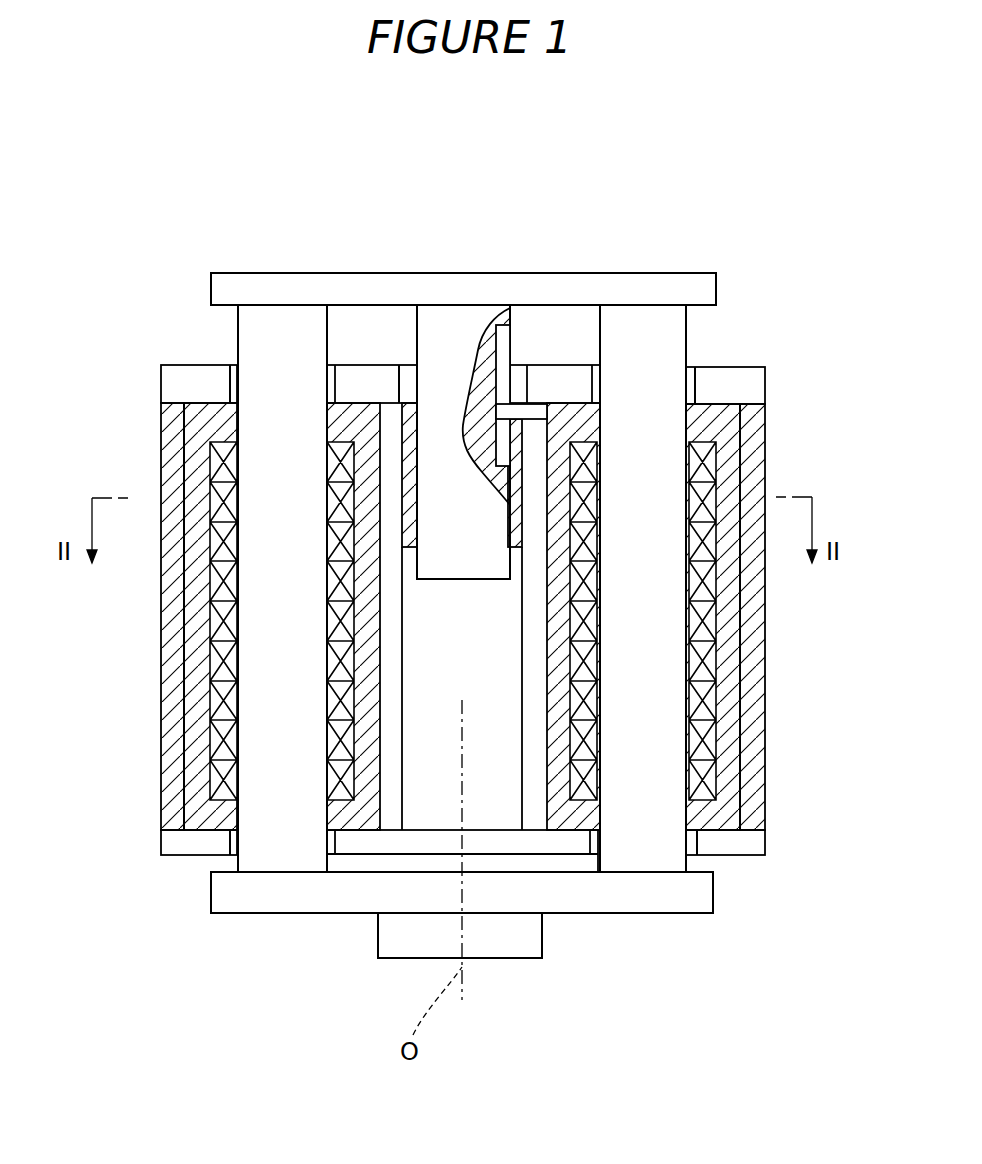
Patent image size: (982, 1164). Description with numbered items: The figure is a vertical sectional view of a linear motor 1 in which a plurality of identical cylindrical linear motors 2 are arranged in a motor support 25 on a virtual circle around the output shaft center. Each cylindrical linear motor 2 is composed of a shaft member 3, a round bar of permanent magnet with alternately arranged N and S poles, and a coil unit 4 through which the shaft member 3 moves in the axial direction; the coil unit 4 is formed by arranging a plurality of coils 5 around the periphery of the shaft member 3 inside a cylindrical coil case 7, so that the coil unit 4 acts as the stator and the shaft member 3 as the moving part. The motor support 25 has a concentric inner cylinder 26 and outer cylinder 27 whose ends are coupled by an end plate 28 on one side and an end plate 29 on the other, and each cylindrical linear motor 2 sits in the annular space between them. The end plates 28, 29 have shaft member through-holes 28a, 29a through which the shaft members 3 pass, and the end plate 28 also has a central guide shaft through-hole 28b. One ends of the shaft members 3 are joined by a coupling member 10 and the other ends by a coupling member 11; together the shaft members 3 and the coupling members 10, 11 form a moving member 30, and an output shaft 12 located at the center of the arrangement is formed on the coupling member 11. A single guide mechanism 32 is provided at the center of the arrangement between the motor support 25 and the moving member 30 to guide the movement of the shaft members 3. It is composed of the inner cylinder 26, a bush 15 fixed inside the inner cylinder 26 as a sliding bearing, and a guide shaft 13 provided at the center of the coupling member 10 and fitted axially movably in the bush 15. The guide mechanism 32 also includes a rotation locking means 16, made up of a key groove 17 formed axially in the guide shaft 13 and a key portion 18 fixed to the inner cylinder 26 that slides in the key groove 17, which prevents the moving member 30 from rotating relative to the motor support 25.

The linear motor 1 is at (134, 357).
The cylindrical linear motor 2 is at (92, 583).
The shaft member 3 is at (247, 633).
The coil unit 4 is at (206, 591).
The coil 5 is at (215, 702).
The coil case 7 is at (193, 722).
The coupling member 10 is at (698, 290).
The coupling member 11 is at (693, 892).
The output shaft 12 is at (517, 945).
The guide shaft 13 is at (463, 328).
The bush 15 is at (430, 427).
The rotation locking means 16 is at (658, 190).
The key groove 17 is at (533, 403).
The key portion 18 is at (503, 337).
The motor support 25 is at (149, 452).
The inner cylinder 26 is at (392, 803).
The outer cylinder 27 is at (168, 793).
The end plate 28 is at (187, 375).
The shaft member through-hole 28a is at (230, 383).
The guide shaft through-hole 28b is at (407, 375).
The end plate 29 is at (172, 843).
The shaft member through-hole 29a is at (245, 838).
The moving member 30 is at (660, 922).
The guide mechanism 32 is at (449, 598).